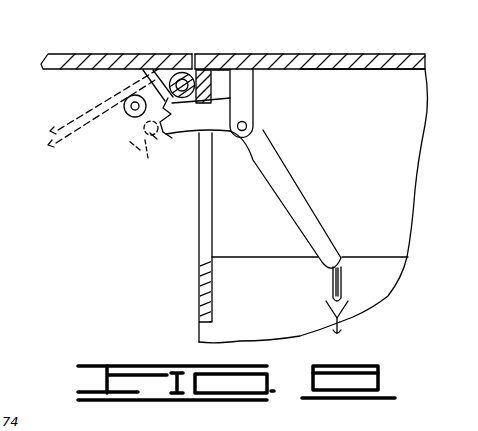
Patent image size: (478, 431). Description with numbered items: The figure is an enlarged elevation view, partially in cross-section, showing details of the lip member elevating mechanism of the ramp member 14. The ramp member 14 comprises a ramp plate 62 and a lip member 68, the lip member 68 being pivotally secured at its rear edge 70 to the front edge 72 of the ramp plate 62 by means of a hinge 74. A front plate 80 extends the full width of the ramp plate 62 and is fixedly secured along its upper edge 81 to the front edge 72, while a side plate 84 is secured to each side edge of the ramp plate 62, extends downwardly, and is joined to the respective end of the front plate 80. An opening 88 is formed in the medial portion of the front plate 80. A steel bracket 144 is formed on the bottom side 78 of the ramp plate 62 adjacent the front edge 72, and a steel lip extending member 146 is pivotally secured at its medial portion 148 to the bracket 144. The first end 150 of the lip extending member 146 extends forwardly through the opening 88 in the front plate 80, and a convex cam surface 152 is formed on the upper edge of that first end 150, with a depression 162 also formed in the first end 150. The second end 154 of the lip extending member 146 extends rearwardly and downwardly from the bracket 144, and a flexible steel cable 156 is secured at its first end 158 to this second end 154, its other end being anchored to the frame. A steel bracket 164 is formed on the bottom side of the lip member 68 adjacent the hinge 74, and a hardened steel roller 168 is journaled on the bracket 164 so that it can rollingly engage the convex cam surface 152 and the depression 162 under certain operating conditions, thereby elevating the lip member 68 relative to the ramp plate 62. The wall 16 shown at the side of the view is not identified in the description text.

The ramp member 14 is at (340, 50).
The side wall 16 is at (399, 262).
The ramp plate 62 is at (376, 54).
The lip member 68 is at (52, 54).
The rear edge of lip member 70 is at (193, 66).
The front edge of ramp plate 72 is at (204, 70).
The hinge 74 is at (182, 72).
The bottom side of ramp plate 78 is at (371, 71).
The front plate 80 is at (202, 287).
The upper edge of front plate 81 is at (225, 71).
The side plate 84 is at (388, 288).
The opening 88 is at (214, 258).
The bracket 144 is at (246, 87).
The lip extending member 146 is at (313, 229).
The medial portion of lip extending member 148 is at (262, 137).
The first end of lip extending member 150 is at (185, 133).
The convex cam surface 152 is at (172, 106).
The second end of lip extending member 154 is at (328, 265).
The flexible steel cable 156 is at (340, 334).
The first end of cable 158 is at (327, 304).
The depression 162 is at (150, 136).
The bracket 164 is at (143, 80).
The roller 168 is at (127, 118).